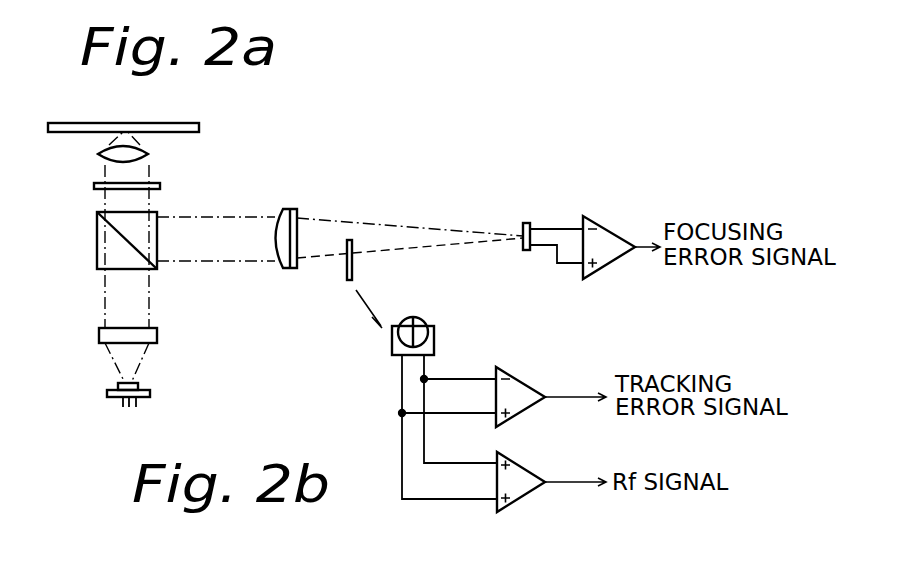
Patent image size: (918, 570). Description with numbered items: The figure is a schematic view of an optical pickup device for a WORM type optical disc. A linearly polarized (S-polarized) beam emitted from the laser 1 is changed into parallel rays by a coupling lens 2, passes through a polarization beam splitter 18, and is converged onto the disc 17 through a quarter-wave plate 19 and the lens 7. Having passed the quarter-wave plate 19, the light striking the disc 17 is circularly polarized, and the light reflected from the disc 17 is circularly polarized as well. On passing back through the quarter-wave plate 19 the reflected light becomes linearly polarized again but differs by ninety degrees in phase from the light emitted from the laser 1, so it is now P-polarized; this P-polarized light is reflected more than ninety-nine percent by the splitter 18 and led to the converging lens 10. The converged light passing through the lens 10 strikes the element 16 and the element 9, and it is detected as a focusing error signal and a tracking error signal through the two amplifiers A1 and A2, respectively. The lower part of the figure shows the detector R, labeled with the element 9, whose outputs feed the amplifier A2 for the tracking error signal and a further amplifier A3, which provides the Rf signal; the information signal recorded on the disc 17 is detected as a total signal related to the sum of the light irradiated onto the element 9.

In FIG. 2A, the WORM type optical disc 17 is at (191, 123).
In FIG. 2A, the lens 7 is at (148, 156).
In FIG. 2A, the quarter-wave plate 19 is at (94, 186).
In FIG. 2A, the polarization beam splitter 18 is at (158, 211).
In FIG. 2A, the converging lens 10 is at (294, 209).
In FIG. 2A, the element 9 is at (347, 277).
In FIG. 2B, the element 9 is at (434, 340).
In FIG. 2A, the element 16 is at (527, 223).
In FIG. 2A, the coupling lens 2 is at (158, 334).
In FIG. 2A, the laser 1 is at (151, 393).
In FIG. 2A, the amplifier A1 is at (595, 266).
In FIG. 2B, the split photodetector R is at (425, 321).
In FIG. 2B, the amplifier A2 is at (531, 410).
In FIG. 2B, the summing amplifier A3 is at (528, 490).